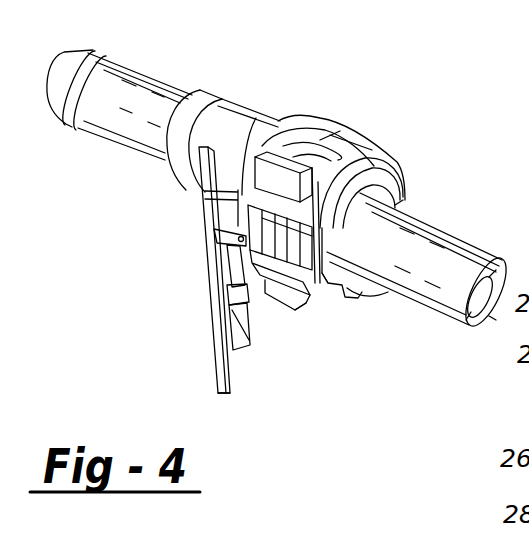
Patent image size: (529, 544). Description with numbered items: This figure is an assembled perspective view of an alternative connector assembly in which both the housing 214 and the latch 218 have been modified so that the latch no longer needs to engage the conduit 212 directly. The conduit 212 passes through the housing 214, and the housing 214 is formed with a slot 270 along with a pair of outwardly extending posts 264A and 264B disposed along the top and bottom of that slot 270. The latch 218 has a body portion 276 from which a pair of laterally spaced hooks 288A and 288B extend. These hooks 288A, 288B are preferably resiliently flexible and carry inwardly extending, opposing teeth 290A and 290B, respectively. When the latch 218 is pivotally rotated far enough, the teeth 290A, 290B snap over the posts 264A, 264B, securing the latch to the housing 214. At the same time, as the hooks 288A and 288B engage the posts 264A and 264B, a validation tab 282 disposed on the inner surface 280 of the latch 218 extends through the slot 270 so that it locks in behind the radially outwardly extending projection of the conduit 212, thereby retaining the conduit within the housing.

The conduit 212 is at (453, 236).
The housing 214 is at (136, 80).
The latch 218 is at (205, 272).
The post 264A is at (271, 170).
The post 264B is at (295, 284).
The slot 270 is at (337, 153).
The body portion 276 is at (218, 280).
The inner surface 280 is at (235, 326).
The validation tab 282 is at (246, 296).
The hook 288A is at (227, 197).
The hook 288B is at (243, 348).
The tooth 290A is at (206, 222).
The tooth 290B is at (228, 324).